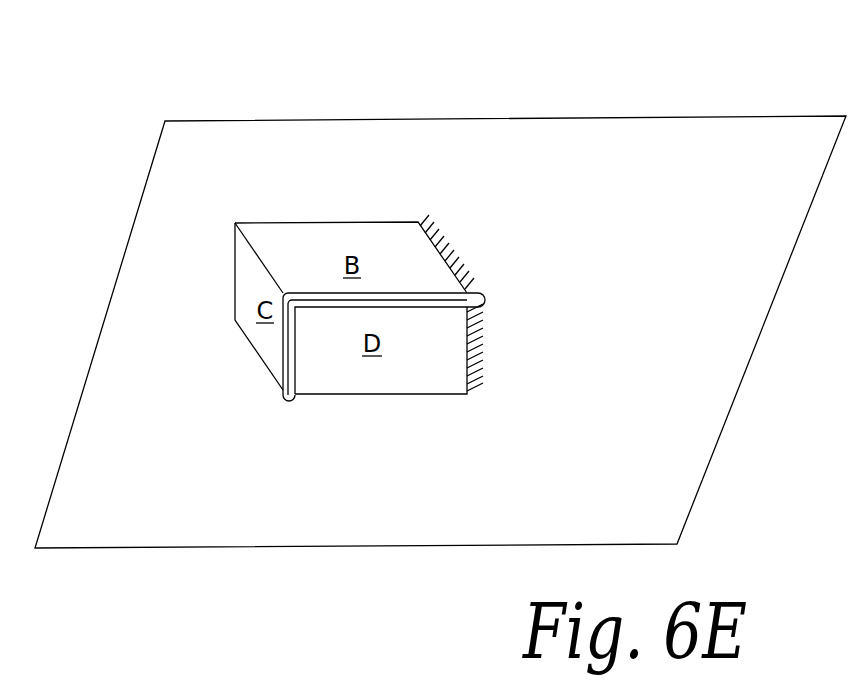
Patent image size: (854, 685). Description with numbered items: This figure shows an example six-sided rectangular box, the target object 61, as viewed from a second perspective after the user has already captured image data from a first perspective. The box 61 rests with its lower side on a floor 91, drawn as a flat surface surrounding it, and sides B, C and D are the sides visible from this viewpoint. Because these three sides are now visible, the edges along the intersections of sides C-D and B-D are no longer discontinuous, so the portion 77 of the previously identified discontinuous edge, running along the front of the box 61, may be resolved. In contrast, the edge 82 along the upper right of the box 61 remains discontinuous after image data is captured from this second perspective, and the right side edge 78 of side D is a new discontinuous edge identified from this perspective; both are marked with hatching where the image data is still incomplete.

The target object 61 is at (263, 260).
The portion of the discontinuous edge 77 is at (382, 290).
The edge 82 is at (455, 267).
The right side edge of side D 78 is at (467, 355).
The floor 91 is at (708, 318).